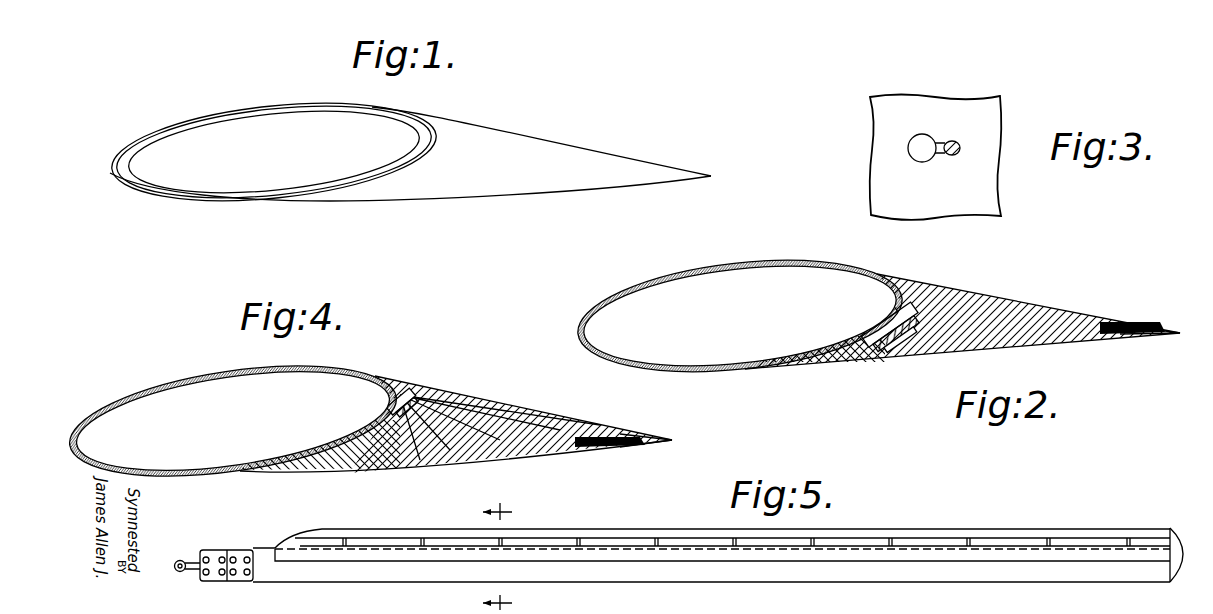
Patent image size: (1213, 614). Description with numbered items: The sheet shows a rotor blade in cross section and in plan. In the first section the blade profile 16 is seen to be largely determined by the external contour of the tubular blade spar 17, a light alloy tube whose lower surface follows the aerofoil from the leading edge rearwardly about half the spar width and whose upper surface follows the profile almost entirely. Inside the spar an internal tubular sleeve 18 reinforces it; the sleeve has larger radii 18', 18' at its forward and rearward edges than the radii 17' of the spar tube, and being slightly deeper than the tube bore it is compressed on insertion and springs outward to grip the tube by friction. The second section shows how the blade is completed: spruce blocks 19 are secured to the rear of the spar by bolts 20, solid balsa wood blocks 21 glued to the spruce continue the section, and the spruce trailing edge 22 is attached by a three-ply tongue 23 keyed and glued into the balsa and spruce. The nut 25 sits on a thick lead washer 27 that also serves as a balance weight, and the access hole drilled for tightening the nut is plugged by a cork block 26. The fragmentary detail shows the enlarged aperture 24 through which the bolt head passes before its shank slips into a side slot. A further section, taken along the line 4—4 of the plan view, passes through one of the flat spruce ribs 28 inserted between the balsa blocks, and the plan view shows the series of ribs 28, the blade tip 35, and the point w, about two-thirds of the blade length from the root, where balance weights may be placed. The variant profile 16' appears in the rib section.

In FIG. 1, the blade profile 16 is at (410, 174).
In FIG. 4, the blade body section 16' is at (397, 380).
In FIG. 1, the tubular blade spar 17 is at (274, 165).
In FIG. 2, the tubular blade spar 17 is at (740, 311).
In FIG. 4, the tubular blade spar 17 is at (232, 420).
In FIG. 5, the tubular blade spar 17 is at (673, 571).
In FIG. 1, the radii of the spar tube 17' is at (277, 169).
In FIG. 1, the internal tubular sleeve 18 is at (274, 152).
In FIG. 1, the radii of the sleeve 18' is at (273, 149).
In FIG. 2, the spruce blocks 19 is at (823, 368).
In FIG. 4, the spruce blocks 19 is at (338, 466).
In FIG. 5, the spruce blocks 19 is at (325, 556).
In FIG. 2, the bolt 20 is at (875, 308).
In FIG. 2, the balsa wood blocks 21 is at (1013, 300).
In FIG. 5, the balsa wood blocks 21 is at (680, 540).
In FIG. 2, the trailing edge 22 is at (1150, 326).
In FIG. 4, the trailing edge 22 is at (644, 437).
In FIG. 5, the trailing edge 22 is at (612, 530).
In FIG. 2, the 3-ply tongue 23 is at (1125, 338).
In FIG. 4, the 3-ply tongue 23 is at (590, 437).
In FIG. 3, the enlarged aperture 24 is at (915, 162).
In FIG. 2, the nut 25 is at (905, 362).
In FIG. 2, the cork block 26 is at (915, 358).
In FIG. 2, the lead washer 27 is at (876, 366).
In FIG. 4, the spruce ribs 28 is at (476, 405).
In FIG. 5, the spruce ribs 28 is at (1050, 543).
In FIG. 5, the blade tip 35 is at (1180, 548).
In FIG. 5, the section line 4- 4 is at (500, 551).
In FIG. 5, the balance weight location w is at (880, 548).